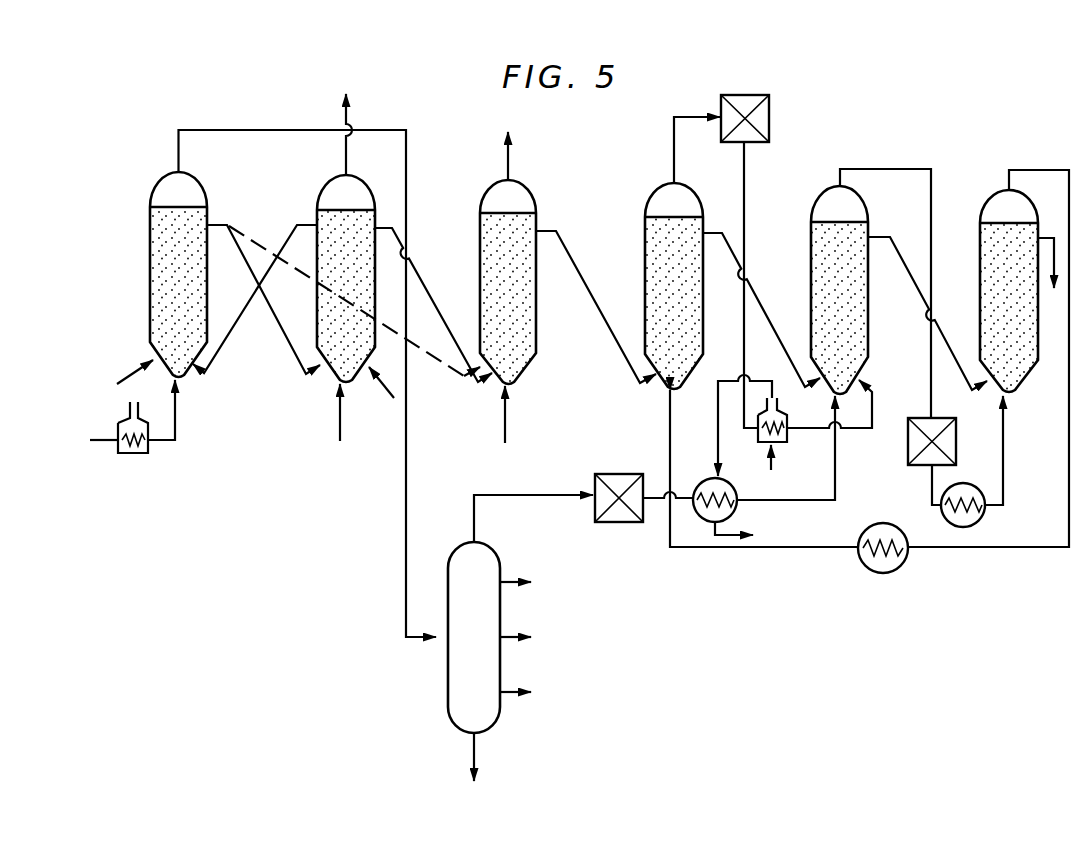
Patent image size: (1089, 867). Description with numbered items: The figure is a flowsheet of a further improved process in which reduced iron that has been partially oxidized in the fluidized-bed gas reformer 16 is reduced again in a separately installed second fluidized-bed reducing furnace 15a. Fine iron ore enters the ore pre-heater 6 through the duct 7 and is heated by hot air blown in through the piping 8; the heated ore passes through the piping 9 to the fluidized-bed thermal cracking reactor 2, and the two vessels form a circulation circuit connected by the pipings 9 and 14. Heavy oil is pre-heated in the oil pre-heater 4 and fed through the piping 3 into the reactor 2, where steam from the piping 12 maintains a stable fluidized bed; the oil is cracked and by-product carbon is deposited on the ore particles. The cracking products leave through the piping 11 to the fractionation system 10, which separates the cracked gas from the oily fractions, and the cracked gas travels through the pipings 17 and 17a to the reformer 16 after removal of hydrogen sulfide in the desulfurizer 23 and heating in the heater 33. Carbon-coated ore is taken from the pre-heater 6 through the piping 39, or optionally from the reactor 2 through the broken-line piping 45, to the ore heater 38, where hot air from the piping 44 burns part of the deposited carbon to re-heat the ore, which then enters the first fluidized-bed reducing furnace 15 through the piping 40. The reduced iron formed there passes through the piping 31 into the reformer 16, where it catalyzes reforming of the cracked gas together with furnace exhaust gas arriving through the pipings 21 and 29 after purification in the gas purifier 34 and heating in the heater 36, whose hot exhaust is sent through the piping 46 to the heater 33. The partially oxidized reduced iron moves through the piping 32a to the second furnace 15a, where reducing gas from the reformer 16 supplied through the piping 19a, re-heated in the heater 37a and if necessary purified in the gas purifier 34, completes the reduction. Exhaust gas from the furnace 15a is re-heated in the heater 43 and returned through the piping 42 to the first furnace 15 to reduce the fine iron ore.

The fluidized-bed thermal cracking reactor 2 is at (207, 188).
The piping 3 is at (165, 441).
The oil pre-heater 4 is at (118, 425).
The ore pre-heater 6 is at (370, 190).
The duct 7 is at (379, 390).
The piping 8 is at (340, 421).
The piping 9 is at (243, 312).
The fractionation system 10 is at (500, 556).
The piping 11 is at (275, 130).
The piping 12 is at (128, 372).
The piping 14 is at (249, 262).
The first fluidized-bed reducing furnace 15 is at (652, 190).
The second fluidized-bed reducing furnace 15a is at (988, 195).
The fluidized-bed reformer 16 is at (868, 196).
The piping 17 is at (540, 495).
The piping 17a is at (835, 489).
The piping 19a is at (892, 169).
The piping 21 is at (674, 128).
The desulfurizer 23 is at (620, 474).
The piping 29 is at (751, 172).
The piping 31 is at (770, 298).
The piping 32a is at (921, 282).
The heater 33 is at (737, 490).
The gas purifier 34 is at (753, 95).
The heater 36 is at (788, 438).
The heater 37a is at (962, 483).
The ore heater 38 is at (536, 188).
The piping 39 is at (436, 296).
The piping 40 is at (603, 318).
The piping 42 is at (727, 549).
The heater 43 is at (898, 568).
The piping 44 is at (507, 406).
The piping 45 is at (440, 365).
The piping 46 is at (717, 444).